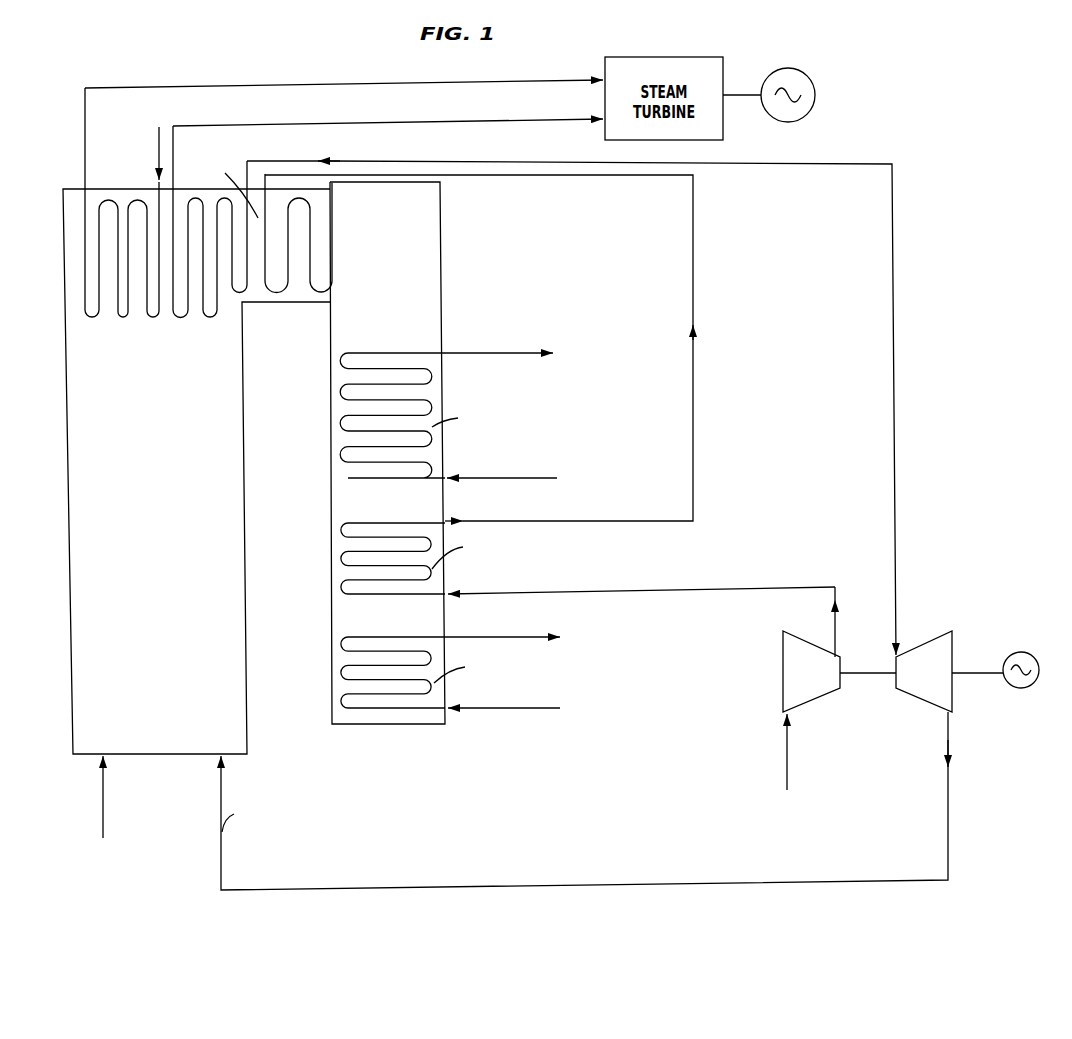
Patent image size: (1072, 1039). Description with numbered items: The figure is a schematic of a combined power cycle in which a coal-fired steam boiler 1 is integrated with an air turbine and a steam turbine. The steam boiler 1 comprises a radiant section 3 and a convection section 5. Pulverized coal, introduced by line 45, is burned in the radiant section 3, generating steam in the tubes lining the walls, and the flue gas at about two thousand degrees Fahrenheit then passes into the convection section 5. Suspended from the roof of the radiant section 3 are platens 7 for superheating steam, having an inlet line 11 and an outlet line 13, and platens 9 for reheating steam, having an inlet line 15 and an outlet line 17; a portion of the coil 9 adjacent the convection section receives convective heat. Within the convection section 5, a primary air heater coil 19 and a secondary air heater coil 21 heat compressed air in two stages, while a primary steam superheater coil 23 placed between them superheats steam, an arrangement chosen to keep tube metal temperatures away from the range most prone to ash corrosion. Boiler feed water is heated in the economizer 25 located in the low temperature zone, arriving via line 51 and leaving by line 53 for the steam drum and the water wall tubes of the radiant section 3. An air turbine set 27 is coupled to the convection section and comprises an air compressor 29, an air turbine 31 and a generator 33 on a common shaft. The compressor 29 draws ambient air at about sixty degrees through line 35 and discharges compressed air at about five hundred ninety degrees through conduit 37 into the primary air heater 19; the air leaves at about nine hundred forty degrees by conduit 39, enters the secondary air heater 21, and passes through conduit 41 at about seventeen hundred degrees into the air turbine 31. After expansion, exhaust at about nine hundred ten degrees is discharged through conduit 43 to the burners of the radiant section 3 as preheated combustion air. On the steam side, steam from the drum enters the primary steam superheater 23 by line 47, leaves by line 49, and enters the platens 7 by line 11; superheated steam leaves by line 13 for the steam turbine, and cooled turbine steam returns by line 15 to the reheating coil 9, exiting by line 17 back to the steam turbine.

The steam boiler 1 is at (66, 571).
The radiant section 3 is at (70, 717).
The convection section 5 is at (328, 602).
The platens for superheating steam 7 is at (84, 320).
The platens for reheating steam 9 is at (193, 316).
The inlet line 11 is at (158, 168).
The outlet line 13 is at (517, 80).
The inlet line 15 is at (283, 163).
The outlet line 17 is at (315, 126).
The primary air heater coil 19 is at (456, 558).
The secondary air heater coil 21 is at (332, 242).
The primary steam superheater coil 23 is at (457, 415).
The economizer 25 is at (447, 672).
The air turbine set 27 is at (899, 676).
The air compressor 29 is at (783, 684).
The air turbine 31 is at (954, 698).
The generator 33 is at (1024, 654).
The line 35 is at (786, 774).
The conduit 37 is at (740, 587).
The conduit 39 is at (694, 273).
The conduit 41 is at (863, 161).
The conduit 43 is at (704, 880).
The line 45 is at (104, 811).
The line 47 is at (494, 481).
The line 49 is at (496, 353).
The line 51 is at (536, 709).
The line 53 is at (520, 636).